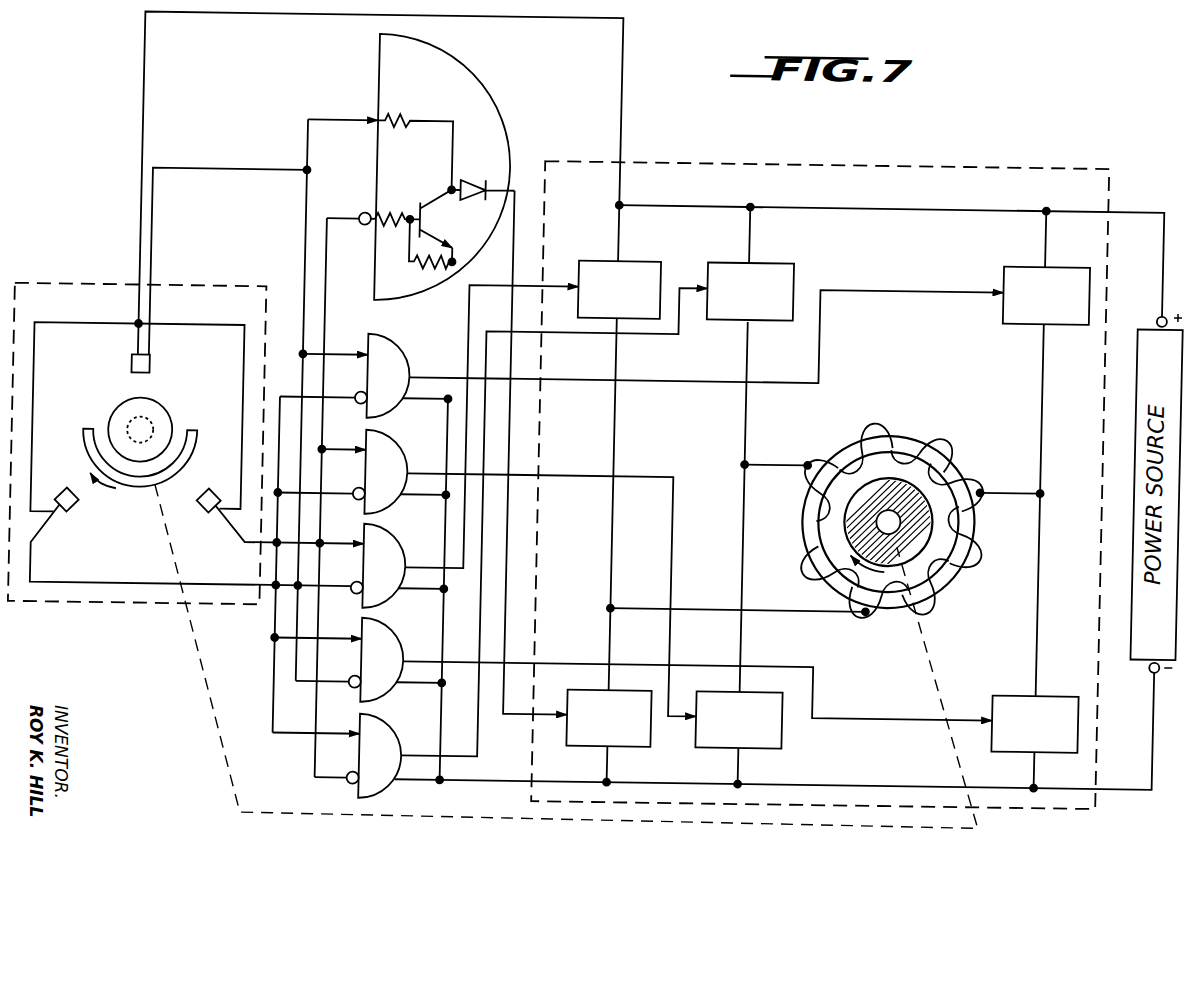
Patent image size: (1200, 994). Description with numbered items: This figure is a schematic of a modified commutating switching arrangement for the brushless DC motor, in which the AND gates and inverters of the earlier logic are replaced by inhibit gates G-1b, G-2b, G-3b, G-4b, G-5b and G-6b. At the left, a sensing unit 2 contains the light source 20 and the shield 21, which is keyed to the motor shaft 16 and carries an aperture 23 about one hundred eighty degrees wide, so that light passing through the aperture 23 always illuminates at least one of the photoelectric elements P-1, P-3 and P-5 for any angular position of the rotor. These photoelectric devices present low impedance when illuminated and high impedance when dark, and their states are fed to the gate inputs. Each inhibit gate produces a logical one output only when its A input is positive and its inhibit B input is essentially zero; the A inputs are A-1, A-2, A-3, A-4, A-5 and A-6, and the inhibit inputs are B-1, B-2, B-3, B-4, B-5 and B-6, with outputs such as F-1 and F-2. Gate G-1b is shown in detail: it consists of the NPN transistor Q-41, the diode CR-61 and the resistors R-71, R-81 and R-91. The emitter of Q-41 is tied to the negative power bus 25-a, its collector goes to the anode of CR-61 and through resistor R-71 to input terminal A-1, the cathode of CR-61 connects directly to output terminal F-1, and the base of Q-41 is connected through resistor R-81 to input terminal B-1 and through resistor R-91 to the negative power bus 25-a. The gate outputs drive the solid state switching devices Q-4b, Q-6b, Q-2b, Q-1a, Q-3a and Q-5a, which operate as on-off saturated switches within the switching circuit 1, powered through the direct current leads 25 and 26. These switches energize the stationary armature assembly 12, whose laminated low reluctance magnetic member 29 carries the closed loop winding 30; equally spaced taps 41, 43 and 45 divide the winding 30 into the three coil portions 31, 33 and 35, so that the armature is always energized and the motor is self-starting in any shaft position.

The motor control circuit 1 is at (888, 161).
The position sensing unit 2 is at (51, 290).
The stationary armature assembly 12 is at (826, 533).
The motor shaft 16 is at (126, 428).
The light source 20 is at (126, 413).
The shield 21 is at (141, 494).
The aperture 23 is at (184, 440).
The lead 25 is at (1158, 666).
The negative power bus 25-a is at (452, 786).
The lead 26 is at (1155, 310).
The magnetic member 29 is at (907, 416).
The closed loop winding 30 is at (960, 457).
The coil portion 31 is at (816, 567).
The coil portion 33 is at (866, 432).
The coil portion 35 is at (932, 601).
The tap 41 is at (870, 610).
The tap 43 is at (809, 461).
The tap 45 is at (985, 485).
The photoelectric element P-1 is at (149, 370).
The photoelectric element P-3 is at (208, 519).
The photoelectric element P-5 is at (70, 520).
The input terminal A-1 is at (370, 118).
The input terminal A-2 is at (363, 354).
The input terminal A-3 is at (363, 450).
The input terminal A-4 is at (363, 544).
The input terminal A-5 is at (363, 637).
The input terminal A-6 is at (363, 732).
The input terminal B-1 is at (362, 214).
The input terminal B-2 is at (362, 395).
The input terminal B-3 is at (362, 491).
The input terminal B-4 is at (362, 585).
The input terminal B-5 is at (362, 679).
The input terminal B-6 is at (362, 775).
The inhibit gate G-1b is at (483, 101).
The inhibit gate G-2b is at (404, 362).
The inhibit gate G-3b is at (406, 450).
The inhibit gate G-4b is at (406, 552).
The inhibit gate G-5b is at (406, 648).
The inhibit gate G-6b is at (406, 745).
The output terminal F-1 is at (507, 192).
The output terminal F-2 is at (410, 405).
The resistor R-71 is at (406, 108).
The resistor R-81 is at (390, 216).
The resistor R-91 is at (417, 265).
The NPN transistor Q-41 is at (426, 204).
The diode CR-61 is at (480, 172).
The solid state switching device Q-4b is at (619, 290).
The solid state switching device Q-6b is at (750, 291).
The solid state switching device Q-2b is at (1046, 296).
The solid state switching device Q-1a is at (608, 718).
The solid state switching device Q-3a is at (738, 719).
The solid state switching device Q-5a is at (1034, 724).